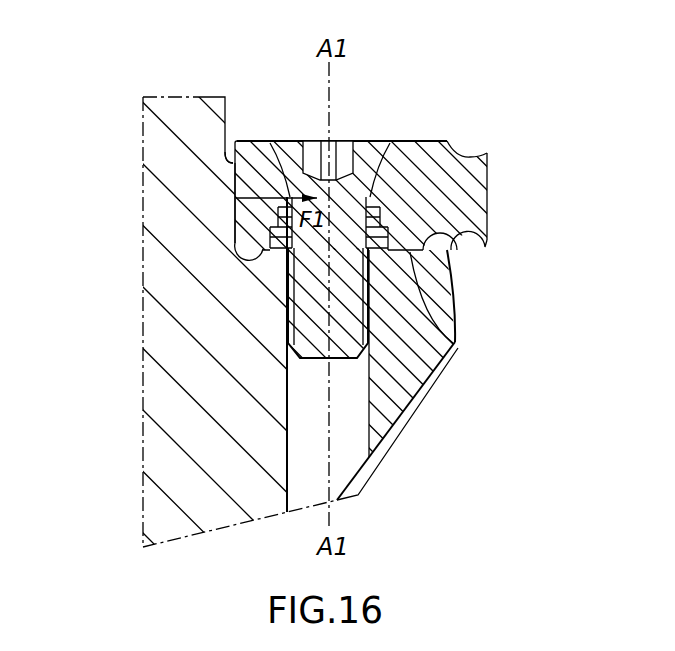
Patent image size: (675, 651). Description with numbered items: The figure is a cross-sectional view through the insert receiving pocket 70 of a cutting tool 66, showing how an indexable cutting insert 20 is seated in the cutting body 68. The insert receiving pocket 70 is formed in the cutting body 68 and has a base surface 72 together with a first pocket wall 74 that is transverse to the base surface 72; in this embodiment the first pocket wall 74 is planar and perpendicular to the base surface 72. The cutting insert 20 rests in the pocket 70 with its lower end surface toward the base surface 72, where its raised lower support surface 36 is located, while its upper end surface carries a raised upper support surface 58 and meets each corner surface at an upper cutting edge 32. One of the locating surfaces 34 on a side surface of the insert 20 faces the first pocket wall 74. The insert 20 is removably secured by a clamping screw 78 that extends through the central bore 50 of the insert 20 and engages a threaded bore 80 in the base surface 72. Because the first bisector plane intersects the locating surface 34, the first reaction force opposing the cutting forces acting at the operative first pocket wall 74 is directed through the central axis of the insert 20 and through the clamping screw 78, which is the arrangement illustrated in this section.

The indexable cutting insert 20 is at (458, 198).
The upper cutting edge 32 is at (487, 153).
The locating surface 34 is at (233, 214).
The lower support surface 36 is at (453, 320).
The central bore 50 is at (383, 147).
The upper support surface 58 is at (420, 140).
The cutting tool 66 is at (127, 165).
The cutting body 68 is at (198, 302).
The insert receiving pocket 70 is at (296, 110).
The base surface 72 is at (463, 240).
The first pocket wall 74 is at (237, 142).
The clamping screw 78 is at (363, 157).
The threaded bore 80 is at (345, 427).